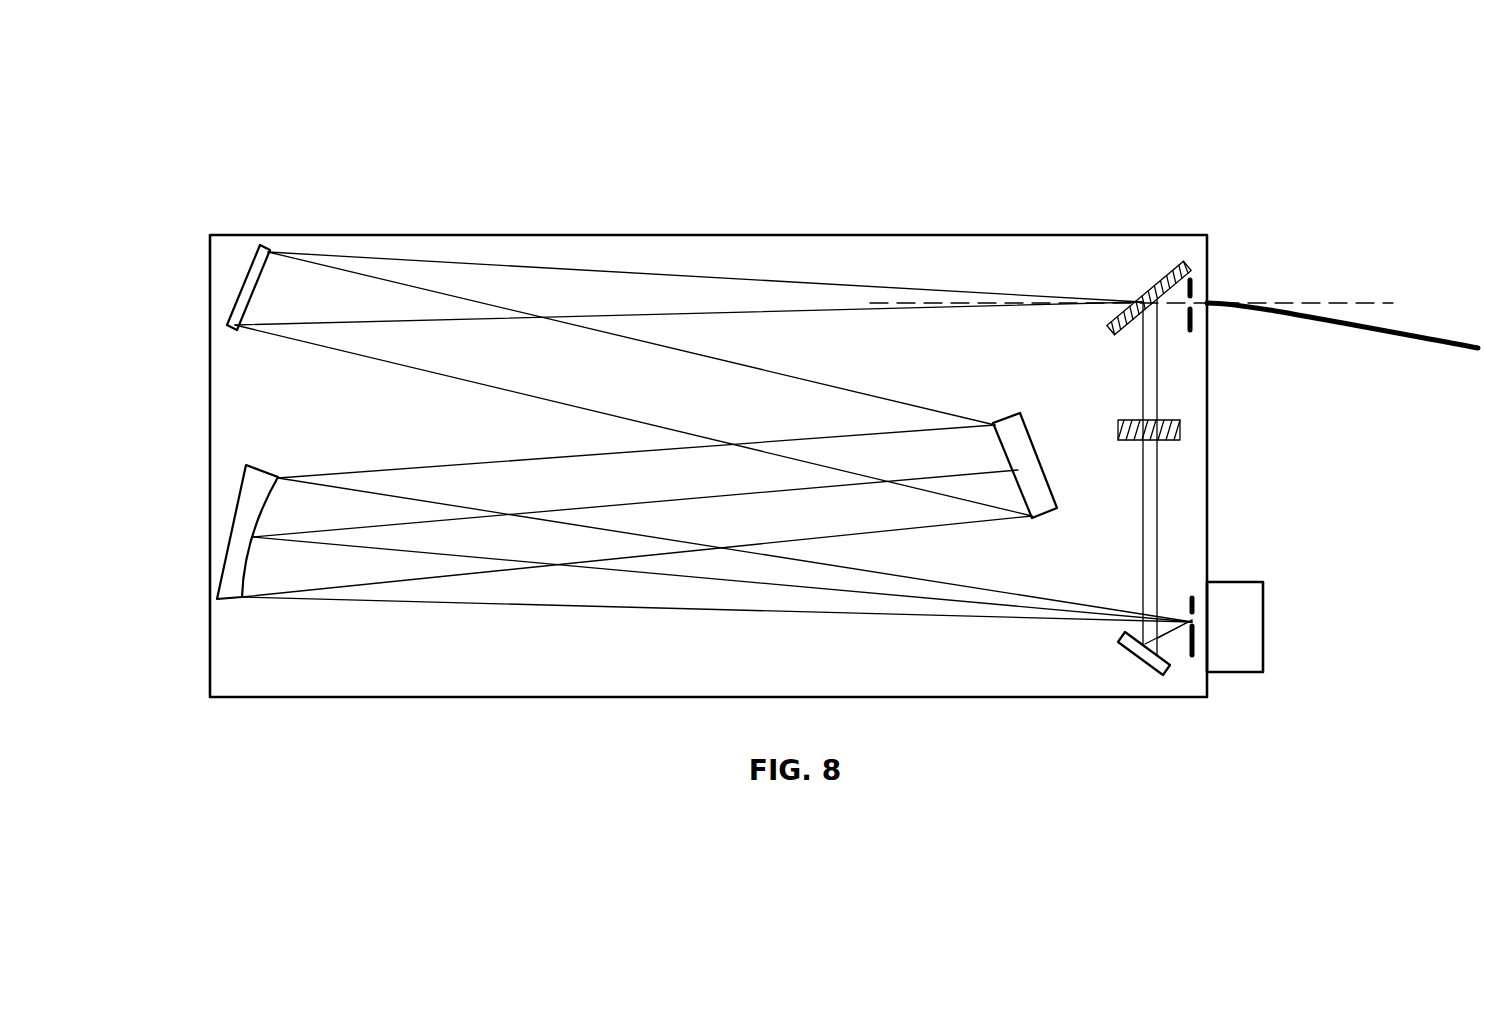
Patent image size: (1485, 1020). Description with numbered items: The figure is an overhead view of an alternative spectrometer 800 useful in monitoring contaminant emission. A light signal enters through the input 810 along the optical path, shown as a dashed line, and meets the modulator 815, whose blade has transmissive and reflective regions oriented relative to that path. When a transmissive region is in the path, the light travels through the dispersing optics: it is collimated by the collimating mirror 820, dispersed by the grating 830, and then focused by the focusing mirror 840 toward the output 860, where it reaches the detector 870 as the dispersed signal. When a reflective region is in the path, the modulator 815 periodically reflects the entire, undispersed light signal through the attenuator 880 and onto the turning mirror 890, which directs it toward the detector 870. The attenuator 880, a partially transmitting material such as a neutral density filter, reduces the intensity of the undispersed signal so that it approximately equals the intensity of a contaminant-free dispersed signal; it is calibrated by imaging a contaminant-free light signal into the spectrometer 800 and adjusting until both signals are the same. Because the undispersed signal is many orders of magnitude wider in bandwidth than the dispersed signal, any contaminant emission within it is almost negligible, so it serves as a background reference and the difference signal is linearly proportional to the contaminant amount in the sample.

The spectrometer 800 is at (947, 197).
The input 810 is at (1207, 302).
The modulator 815 is at (1137, 297).
The collimating mirror 820 is at (262, 247).
The grating 830 is at (1030, 450).
The focusing mirror 840 is at (215, 598).
The output 860 is at (1198, 618).
The detector 870 is at (1248, 650).
The attenuator 880 is at (1183, 430).
The turning mirror 890 is at (1158, 672).